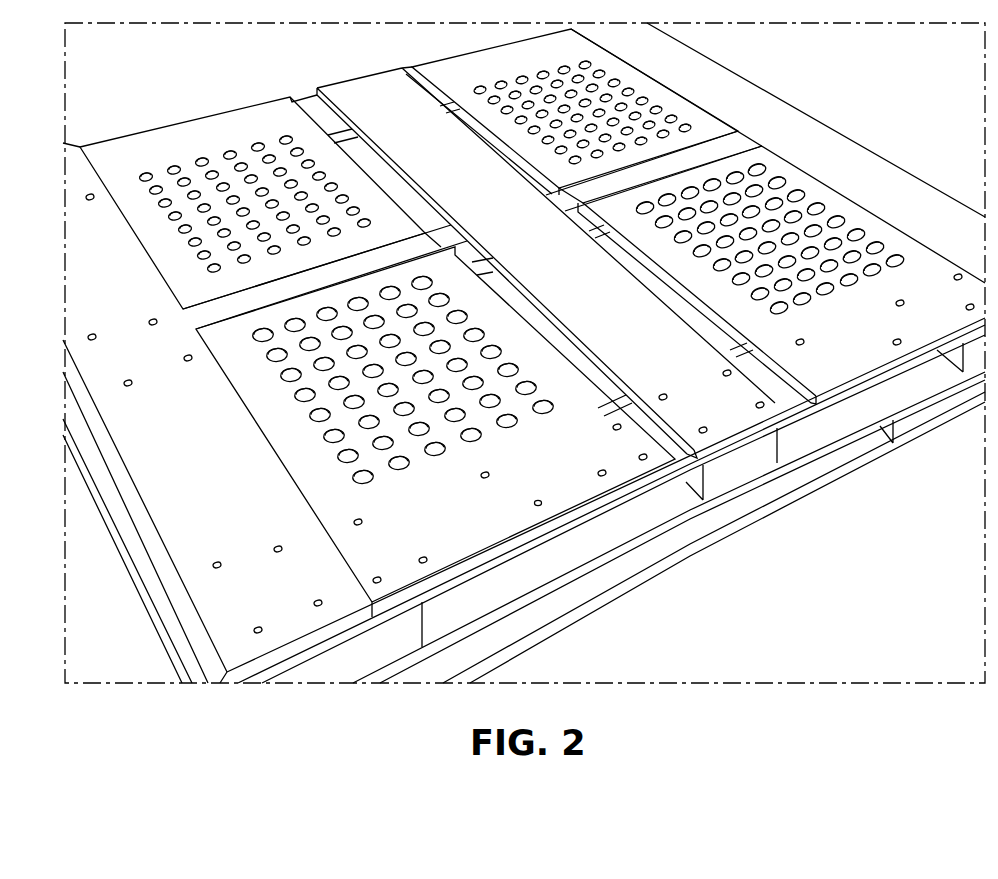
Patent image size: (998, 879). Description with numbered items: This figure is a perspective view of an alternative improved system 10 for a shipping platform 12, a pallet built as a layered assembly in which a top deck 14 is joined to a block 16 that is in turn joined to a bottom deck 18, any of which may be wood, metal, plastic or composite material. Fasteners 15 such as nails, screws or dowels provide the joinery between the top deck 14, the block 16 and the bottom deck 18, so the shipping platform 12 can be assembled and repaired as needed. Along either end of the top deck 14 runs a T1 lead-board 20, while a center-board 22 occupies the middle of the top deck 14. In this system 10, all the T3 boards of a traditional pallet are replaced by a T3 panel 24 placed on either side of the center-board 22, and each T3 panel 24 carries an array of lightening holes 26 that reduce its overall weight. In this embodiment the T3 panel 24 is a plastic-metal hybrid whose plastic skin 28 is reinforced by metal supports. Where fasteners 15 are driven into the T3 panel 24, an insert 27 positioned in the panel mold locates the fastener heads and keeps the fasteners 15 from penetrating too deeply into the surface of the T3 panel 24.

The improved system 10 is at (524, 389).
The shipping platform 12 is at (722, 497).
The top deck 14 is at (195, 547).
The fasteners 15 is at (276, 548).
The block 16 is at (743, 483).
The bottom deck 18 is at (587, 570).
The T1 lead-board 20 is at (167, 517).
The center-board 22 is at (743, 417).
The T3 panel 24 is at (870, 363).
The lightening holes 26 is at (545, 408).
The insert 27 is at (536, 502).
The plastic skin 28 is at (926, 333).